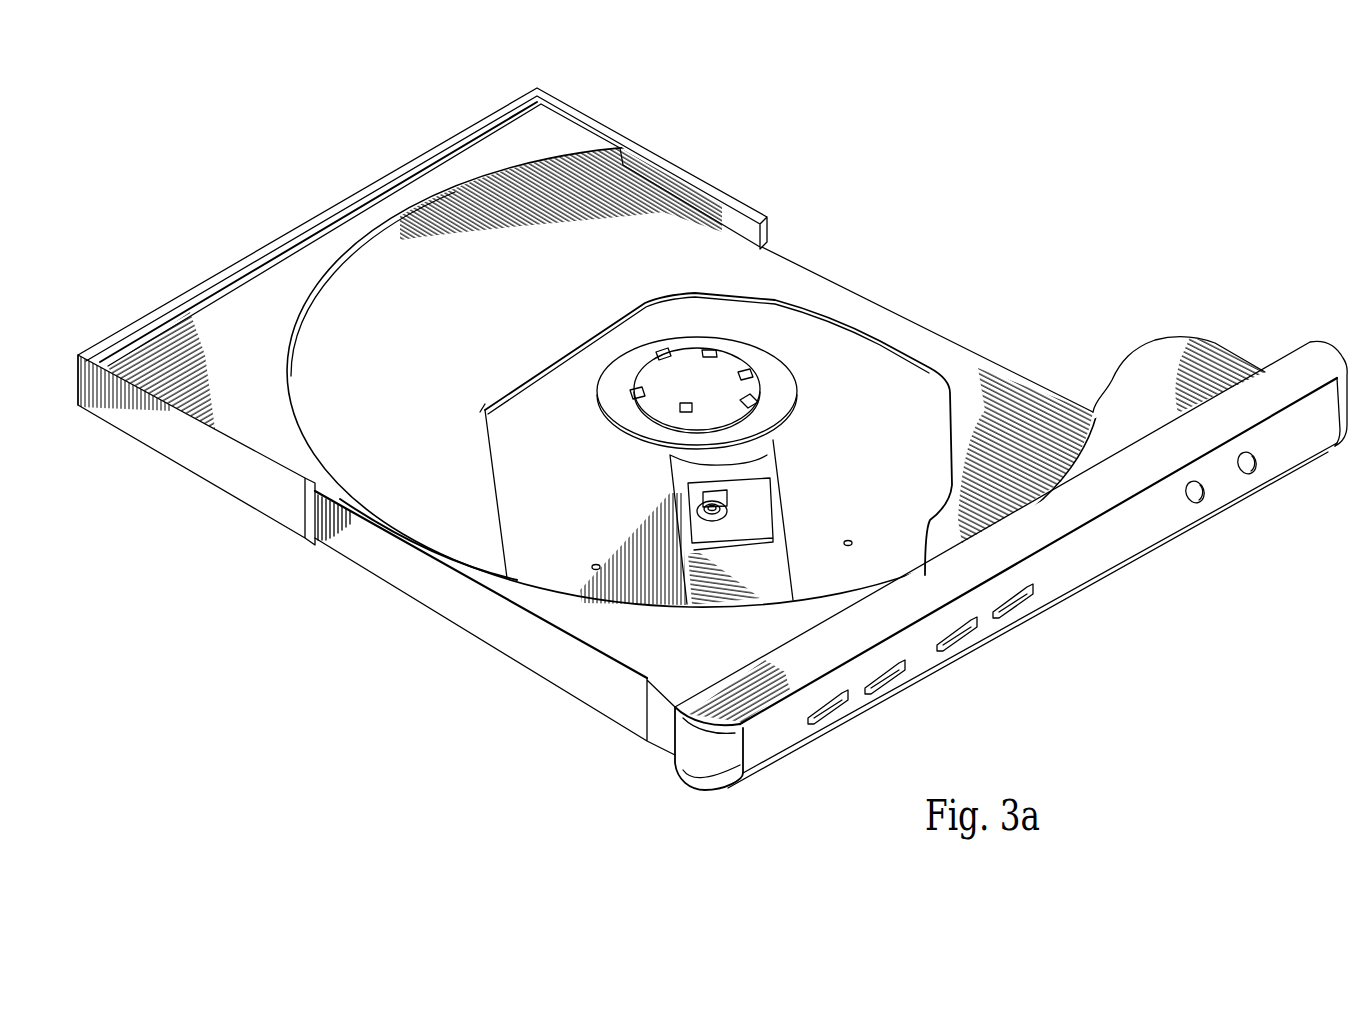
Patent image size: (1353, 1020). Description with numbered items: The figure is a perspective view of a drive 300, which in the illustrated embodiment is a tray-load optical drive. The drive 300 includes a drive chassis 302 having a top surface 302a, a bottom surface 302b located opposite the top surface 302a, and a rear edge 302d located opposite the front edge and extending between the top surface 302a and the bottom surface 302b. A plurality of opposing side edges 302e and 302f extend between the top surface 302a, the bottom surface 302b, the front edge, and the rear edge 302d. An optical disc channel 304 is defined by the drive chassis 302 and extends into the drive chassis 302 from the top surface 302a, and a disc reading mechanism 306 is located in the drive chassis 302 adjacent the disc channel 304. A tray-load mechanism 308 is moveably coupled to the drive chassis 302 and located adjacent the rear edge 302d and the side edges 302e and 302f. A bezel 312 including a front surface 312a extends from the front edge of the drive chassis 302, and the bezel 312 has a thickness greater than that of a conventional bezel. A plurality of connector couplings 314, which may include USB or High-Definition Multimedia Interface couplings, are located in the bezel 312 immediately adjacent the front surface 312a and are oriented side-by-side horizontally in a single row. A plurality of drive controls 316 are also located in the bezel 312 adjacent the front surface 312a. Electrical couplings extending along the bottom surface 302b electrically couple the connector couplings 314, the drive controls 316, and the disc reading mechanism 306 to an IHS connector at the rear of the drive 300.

The drive 300 is at (958, 173).
The drive chassis 302 is at (820, 272).
The top surface 302a is at (235, 292).
The bottom surface 302b is at (583, 687).
The rear edge 302d is at (333, 210).
The side edge 302e is at (500, 623).
The side edge 302f is at (960, 360).
The optical disc channel 304 is at (481, 347).
The disc reading mechanism 306 is at (773, 503).
The tray-load mechanism 308 is at (193, 457).
The bezel 312 is at (693, 757).
The front surface 312a is at (1097, 557).
The connector couplings 314 is at (830, 722).
The drive controls 316 is at (1258, 465).